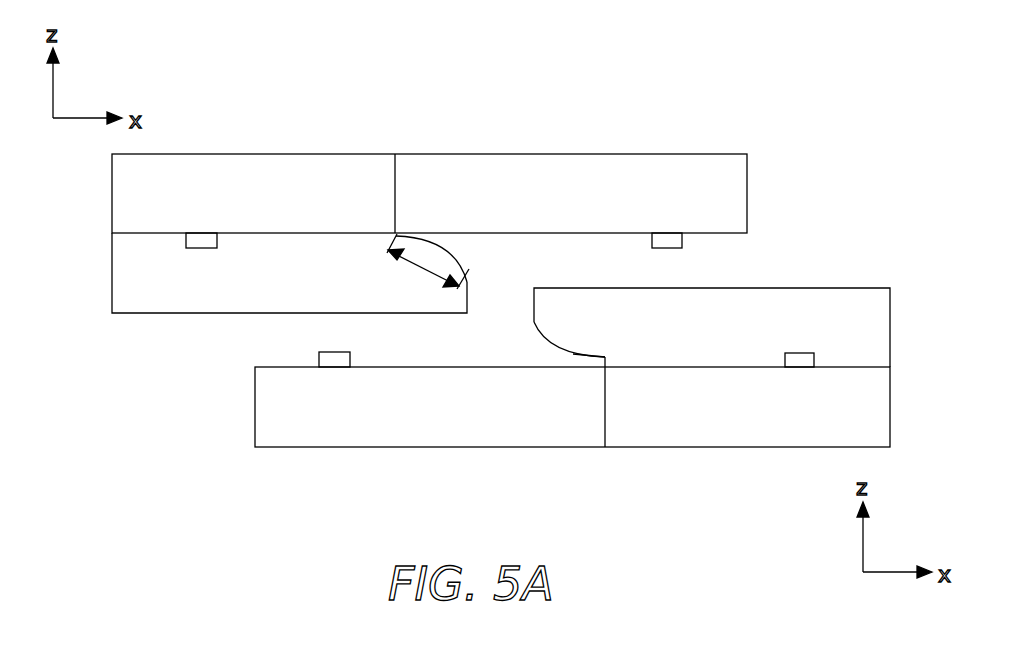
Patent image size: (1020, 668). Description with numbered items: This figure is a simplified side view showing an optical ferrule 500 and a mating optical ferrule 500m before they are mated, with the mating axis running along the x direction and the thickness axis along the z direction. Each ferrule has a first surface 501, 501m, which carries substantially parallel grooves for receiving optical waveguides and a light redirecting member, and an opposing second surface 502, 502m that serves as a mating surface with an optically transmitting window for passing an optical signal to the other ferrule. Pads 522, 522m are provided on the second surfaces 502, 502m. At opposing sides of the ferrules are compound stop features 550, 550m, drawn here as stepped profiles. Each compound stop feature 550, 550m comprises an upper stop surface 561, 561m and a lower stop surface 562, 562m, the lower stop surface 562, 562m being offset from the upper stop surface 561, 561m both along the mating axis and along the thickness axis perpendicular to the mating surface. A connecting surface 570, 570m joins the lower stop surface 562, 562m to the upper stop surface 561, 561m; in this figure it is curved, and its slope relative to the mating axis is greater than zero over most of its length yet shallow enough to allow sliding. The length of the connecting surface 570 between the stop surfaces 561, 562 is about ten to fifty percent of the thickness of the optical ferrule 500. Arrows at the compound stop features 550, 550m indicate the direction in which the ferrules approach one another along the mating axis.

The optical ferrule 500 is at (318, 60).
The first surface 501 is at (563, 154).
The second surface 502 is at (192, 313).
The pad 522 is at (202, 233).
The compound stop feature 550 is at (488, 249).
The upper stop surface 561 is at (398, 184).
The lower stop surface 562 is at (467, 297).
The connecting surface 570 is at (438, 258).
The mating optical ferrule 500m is at (712, 472).
The first surface of mating optical ferrule 501m is at (430, 447).
The second surface of mating optical ferrule 502m is at (813, 288).
The pad of mating optical ferrule 522m is at (332, 352).
The compound stop feature of mating optical ferrule 550m is at (517, 352).
The upper stop surface of mating optical ferrule 561m is at (605, 412).
The lower stop surface of mating optical ferrule 562m is at (535, 305).
The connecting surface of mating optical ferrule 570m is at (573, 354).